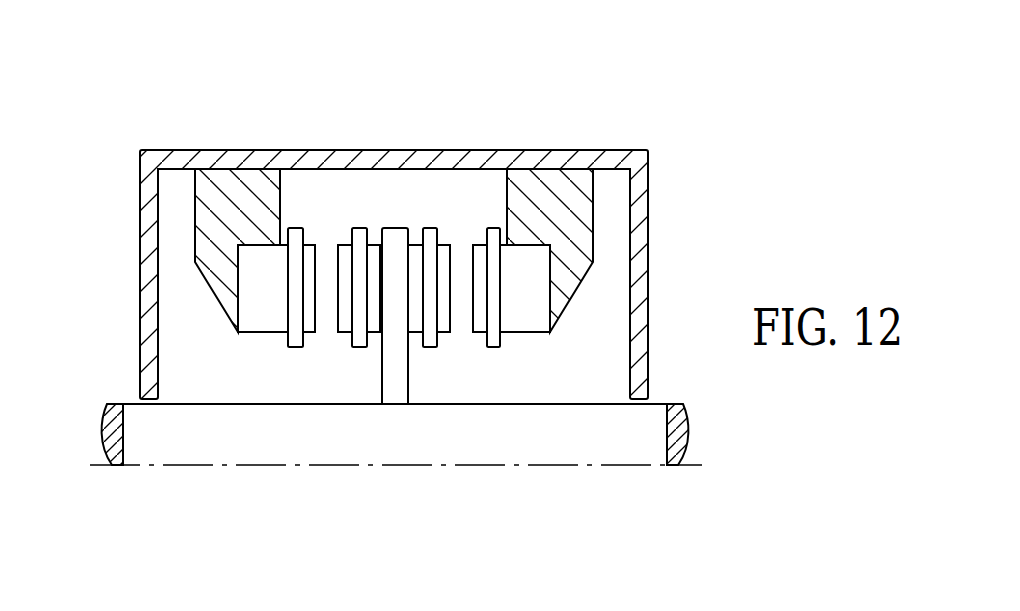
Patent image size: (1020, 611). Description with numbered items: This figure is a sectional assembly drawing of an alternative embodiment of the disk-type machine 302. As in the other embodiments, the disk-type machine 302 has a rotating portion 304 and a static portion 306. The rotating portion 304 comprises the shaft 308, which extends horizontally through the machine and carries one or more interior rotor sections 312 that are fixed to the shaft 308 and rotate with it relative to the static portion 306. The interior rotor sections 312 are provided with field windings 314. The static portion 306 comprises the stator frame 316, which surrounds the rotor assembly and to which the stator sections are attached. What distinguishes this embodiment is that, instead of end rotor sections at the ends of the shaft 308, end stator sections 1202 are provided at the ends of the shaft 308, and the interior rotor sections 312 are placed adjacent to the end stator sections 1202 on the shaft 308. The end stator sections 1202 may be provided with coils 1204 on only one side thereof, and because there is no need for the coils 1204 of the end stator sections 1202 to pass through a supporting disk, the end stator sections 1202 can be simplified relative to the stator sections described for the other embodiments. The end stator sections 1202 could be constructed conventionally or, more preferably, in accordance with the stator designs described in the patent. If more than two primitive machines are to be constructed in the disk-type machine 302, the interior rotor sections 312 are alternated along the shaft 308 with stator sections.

The disk-type machine 302 is at (431, 228).
The rotating portion 304 is at (423, 481).
The static portion 306 is at (378, 141).
The shaft 308 is at (623, 444).
The interior rotor section 312 is at (411, 368).
The field windings 314 is at (350, 351).
The stator frame 316 is at (655, 292).
The end stator section 1202 is at (227, 212).
The coils 1204 is at (489, 217).